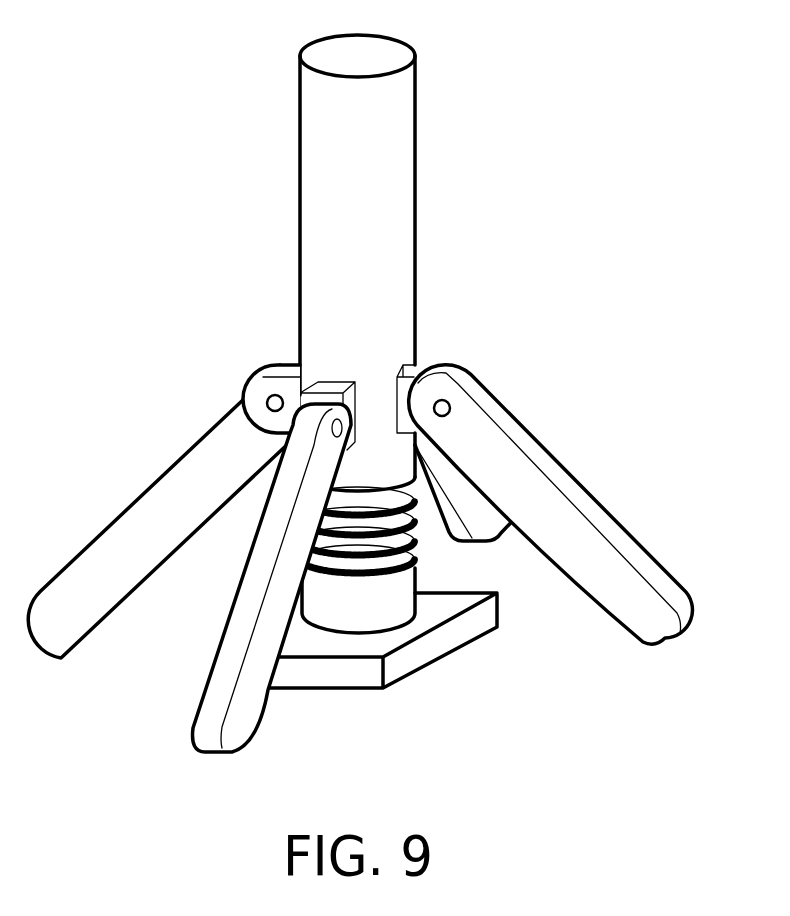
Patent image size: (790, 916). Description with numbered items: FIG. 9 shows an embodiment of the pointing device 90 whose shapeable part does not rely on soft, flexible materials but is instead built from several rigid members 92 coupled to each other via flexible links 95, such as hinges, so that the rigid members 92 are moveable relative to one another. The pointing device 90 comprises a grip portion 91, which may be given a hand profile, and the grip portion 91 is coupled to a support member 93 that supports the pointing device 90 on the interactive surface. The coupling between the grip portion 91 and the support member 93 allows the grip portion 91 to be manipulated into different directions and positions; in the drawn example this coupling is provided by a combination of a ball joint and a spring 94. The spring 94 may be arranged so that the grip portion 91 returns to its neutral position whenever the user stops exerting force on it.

The pointing device 90 is at (360, 388).
The grip portion 91 is at (415, 170).
The rigid members 92 is at (110, 530).
The support member 93 is at (427, 648).
The spring 94 is at (413, 554).
The flexible links 95 is at (275, 403).